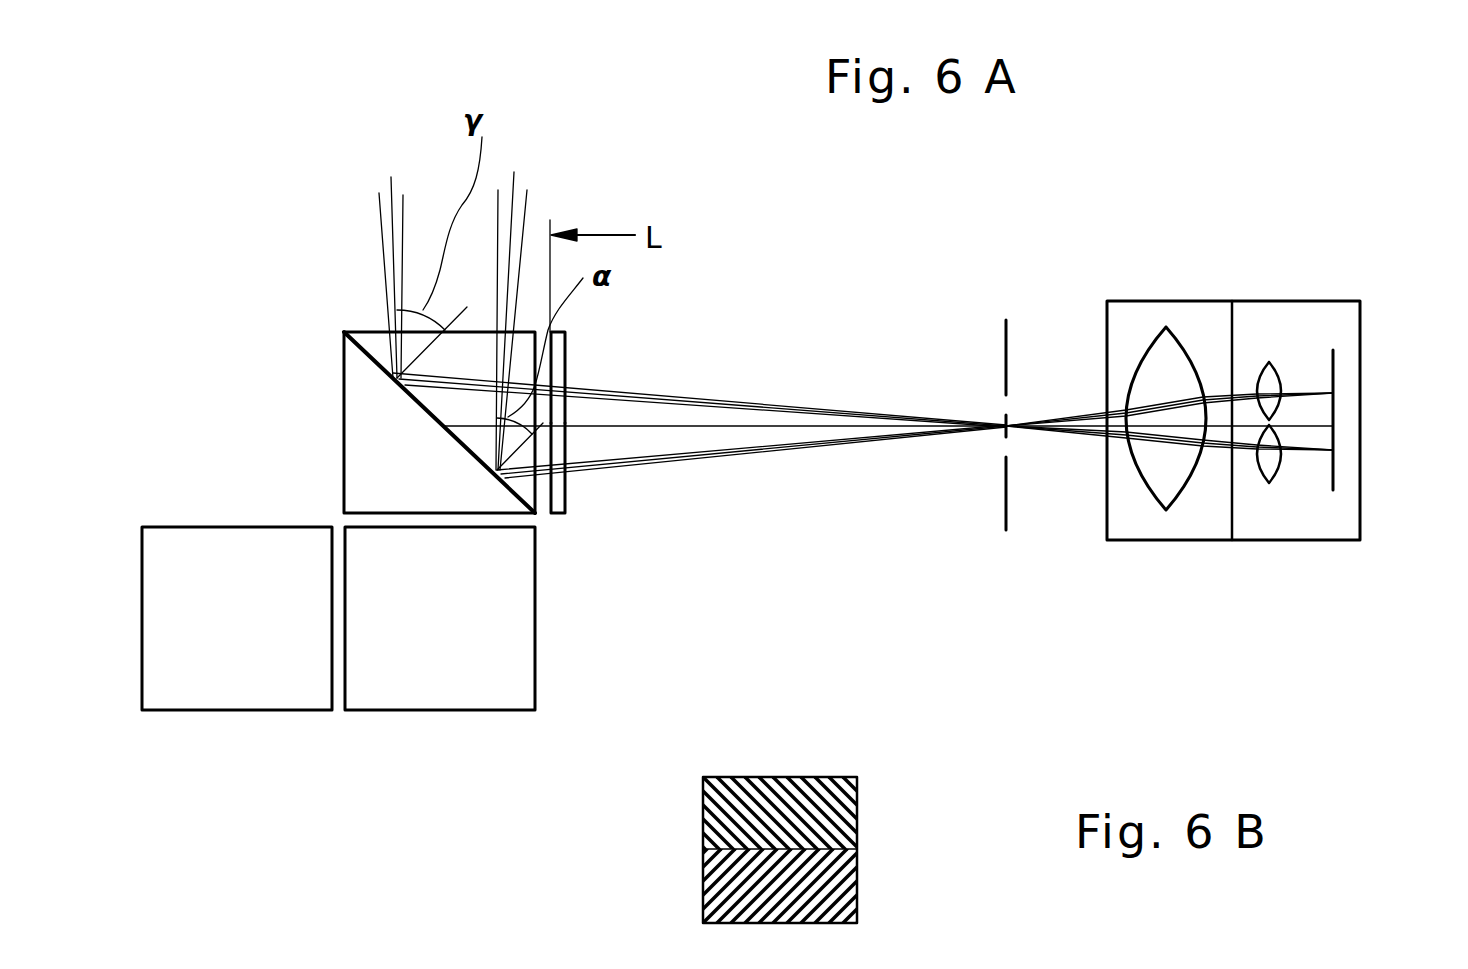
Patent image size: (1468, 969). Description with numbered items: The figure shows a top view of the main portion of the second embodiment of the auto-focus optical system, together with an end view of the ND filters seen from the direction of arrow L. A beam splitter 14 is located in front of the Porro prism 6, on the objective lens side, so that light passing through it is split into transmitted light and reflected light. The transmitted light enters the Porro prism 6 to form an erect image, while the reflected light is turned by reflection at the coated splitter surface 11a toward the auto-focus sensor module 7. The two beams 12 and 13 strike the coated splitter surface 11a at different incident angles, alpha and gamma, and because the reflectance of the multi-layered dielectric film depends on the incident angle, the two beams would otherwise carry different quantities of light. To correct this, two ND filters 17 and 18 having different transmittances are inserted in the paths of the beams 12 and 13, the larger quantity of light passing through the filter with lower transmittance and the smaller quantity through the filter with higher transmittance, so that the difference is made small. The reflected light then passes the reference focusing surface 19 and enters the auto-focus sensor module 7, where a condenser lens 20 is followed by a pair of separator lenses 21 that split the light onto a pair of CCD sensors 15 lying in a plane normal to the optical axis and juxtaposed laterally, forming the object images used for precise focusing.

In FIG. 6A, the Porro prism 6 is at (473, 659).
In FIG. 6A, the auto-focus sensor module 7 is at (1150, 542).
In FIG. 6A, the coated splitter surface 11a is at (423, 412).
In FIG. 6A, the beam 12 is at (687, 457).
In FIG. 6A, the beam 13 is at (675, 400).
In FIG. 6A, the beam splitter 14 is at (363, 418).
In FIG. 6A, the CCD sensors 15 is at (1335, 393).
In FIG. 6A, the ND filter 17 is at (567, 502).
In FIG. 6B, the ND filter 17 is at (823, 902).
In FIG. 6A, the ND filter 18 is at (567, 363).
In FIG. 6B, the ND filter 18 is at (837, 797).
In FIG. 6A, the reference focusing surface 19 is at (1006, 350).
In FIG. 6A, the condenser lens 20 is at (1162, 348).
In FIG. 6A, the separator lenses 21 is at (1270, 362).